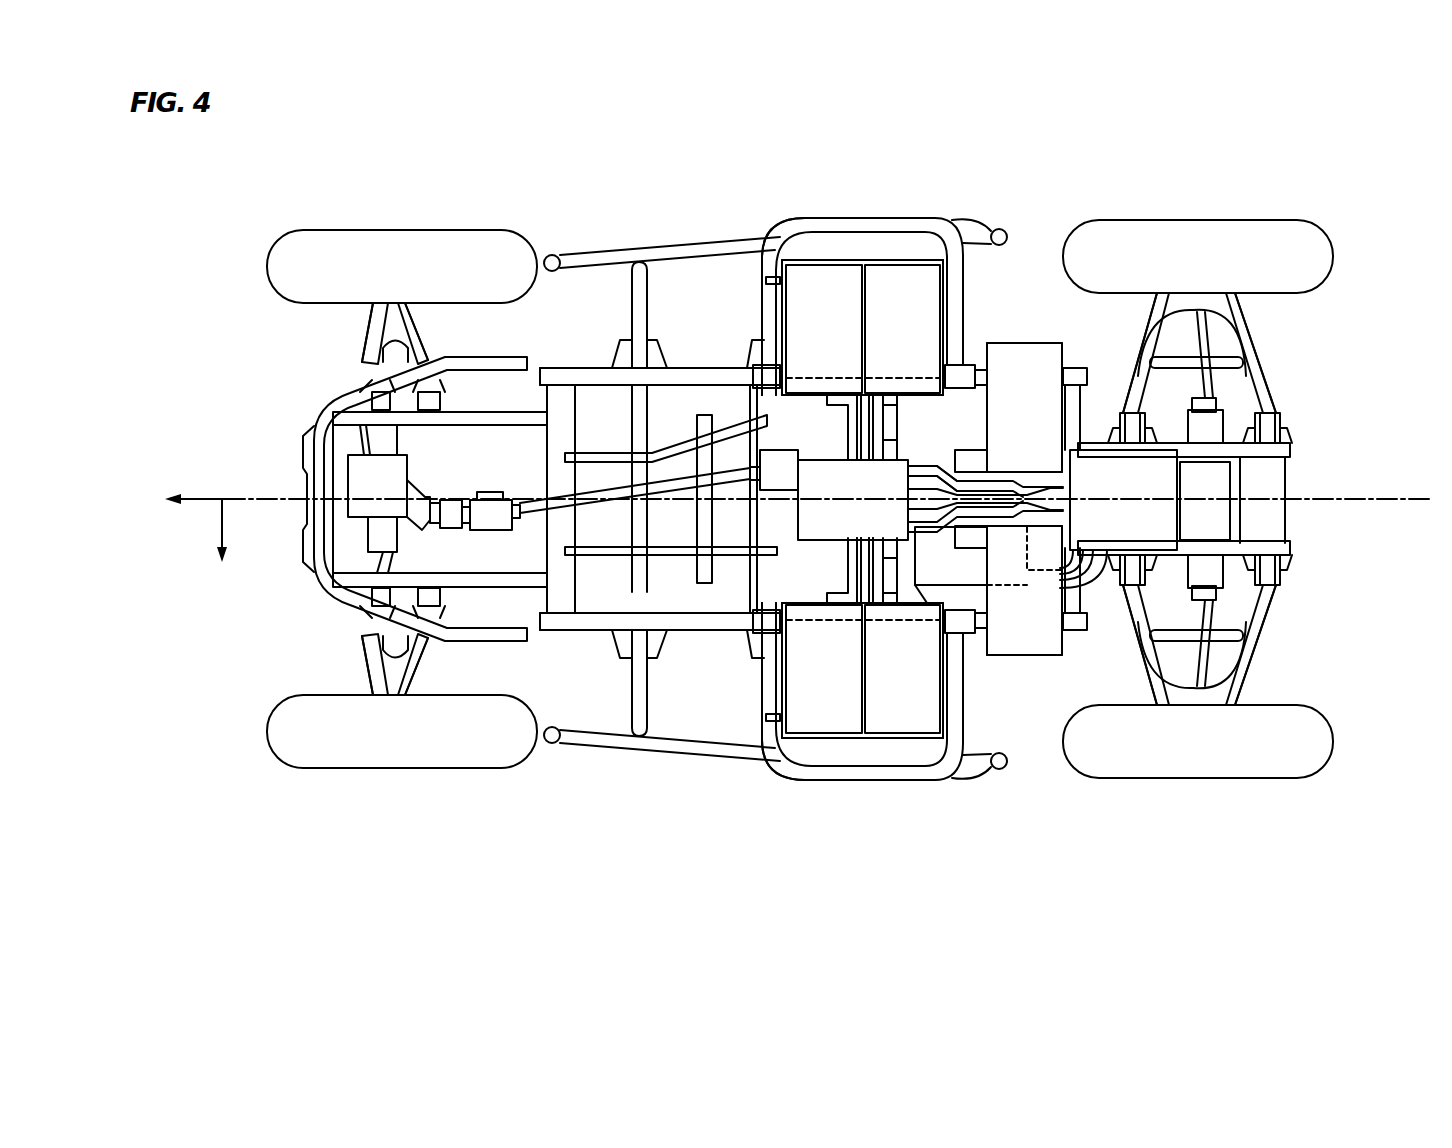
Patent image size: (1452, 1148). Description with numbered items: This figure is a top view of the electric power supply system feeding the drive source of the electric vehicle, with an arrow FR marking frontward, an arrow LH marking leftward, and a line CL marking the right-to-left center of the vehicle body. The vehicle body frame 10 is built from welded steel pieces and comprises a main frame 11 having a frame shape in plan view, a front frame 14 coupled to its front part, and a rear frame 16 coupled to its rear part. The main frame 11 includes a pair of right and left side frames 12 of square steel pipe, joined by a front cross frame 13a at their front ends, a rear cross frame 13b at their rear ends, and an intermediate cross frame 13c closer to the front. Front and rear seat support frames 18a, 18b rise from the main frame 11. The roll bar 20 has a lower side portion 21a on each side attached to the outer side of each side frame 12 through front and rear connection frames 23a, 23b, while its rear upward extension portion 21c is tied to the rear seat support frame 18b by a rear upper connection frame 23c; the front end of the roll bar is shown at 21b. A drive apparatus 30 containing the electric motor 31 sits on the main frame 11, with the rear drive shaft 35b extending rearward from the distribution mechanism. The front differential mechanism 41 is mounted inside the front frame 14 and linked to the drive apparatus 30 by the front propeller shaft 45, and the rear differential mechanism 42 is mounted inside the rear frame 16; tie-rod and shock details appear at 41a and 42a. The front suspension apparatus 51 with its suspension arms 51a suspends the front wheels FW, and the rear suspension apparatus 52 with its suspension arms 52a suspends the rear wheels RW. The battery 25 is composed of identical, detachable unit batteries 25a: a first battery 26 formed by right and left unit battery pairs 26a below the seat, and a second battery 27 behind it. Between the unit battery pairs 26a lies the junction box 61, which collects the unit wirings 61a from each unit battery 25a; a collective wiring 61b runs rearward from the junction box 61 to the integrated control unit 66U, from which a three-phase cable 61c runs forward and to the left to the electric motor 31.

The vehicle body frame 10 is at (660, 383).
The main frame 11 is at (677, 355).
The side frame 12 is at (700, 378).
The front cross frame 13a is at (562, 400).
The rear cross frame 13b is at (1072, 393).
The intermediate cross frame 13c is at (757, 402).
The front frame 14 is at (304, 408).
The rear frame 16 is at (1306, 442).
The front seat support frame 18a is at (768, 372).
The rear seat support frame 18b is at (960, 375).
The roll bar 20 is at (835, 489).
The lower side portion 21a is at (810, 222).
The front pipe end ring 21b is at (553, 255).
The rear upward extension portion 21c is at (1005, 231).
The front connection frame 23a is at (635, 300).
The rear connection frame 23b is at (769, 290).
The rear upper connection frame 23c is at (950, 262).
The battery 25 is at (922, 499).
The unit battery 25a is at (833, 285).
The first battery 26 is at (913, 245).
The unit battery pair 26a is at (806, 114).
The second battery 27 is at (1055, 325).
The drive apparatus 30 is at (990, 684).
The electric motor 31 is at (985, 603).
The rear drive shaft 35b is at (927, 462).
The front differential mechanism 41 is at (405, 477).
The tie rod end 41a is at (390, 353).
The rear differential mechanism 42 is at (1220, 483).
The rear shock absorber 42a is at (1207, 390).
The front propeller shaft 45 is at (613, 493).
The front suspension apparatus 51 is at (395, 499).
The suspension arm 51a is at (407, 330).
The rear suspension apparatus 52 is at (1199, 499).
The suspension arm 52a is at (1240, 340).
The junction box 61 is at (808, 522).
The unit wiring 61a is at (868, 432).
The collective wiring 61b is at (985, 505).
The three-phase cable 61c is at (1097, 575).
The control unit 66U is at (1095, 455).
The front wheel FW is at (317, 243).
The rear wheel RW is at (1290, 224).
The center line CL is at (247, 492).
The arrow FR is at (182, 498).
The arrow LH is at (225, 547).